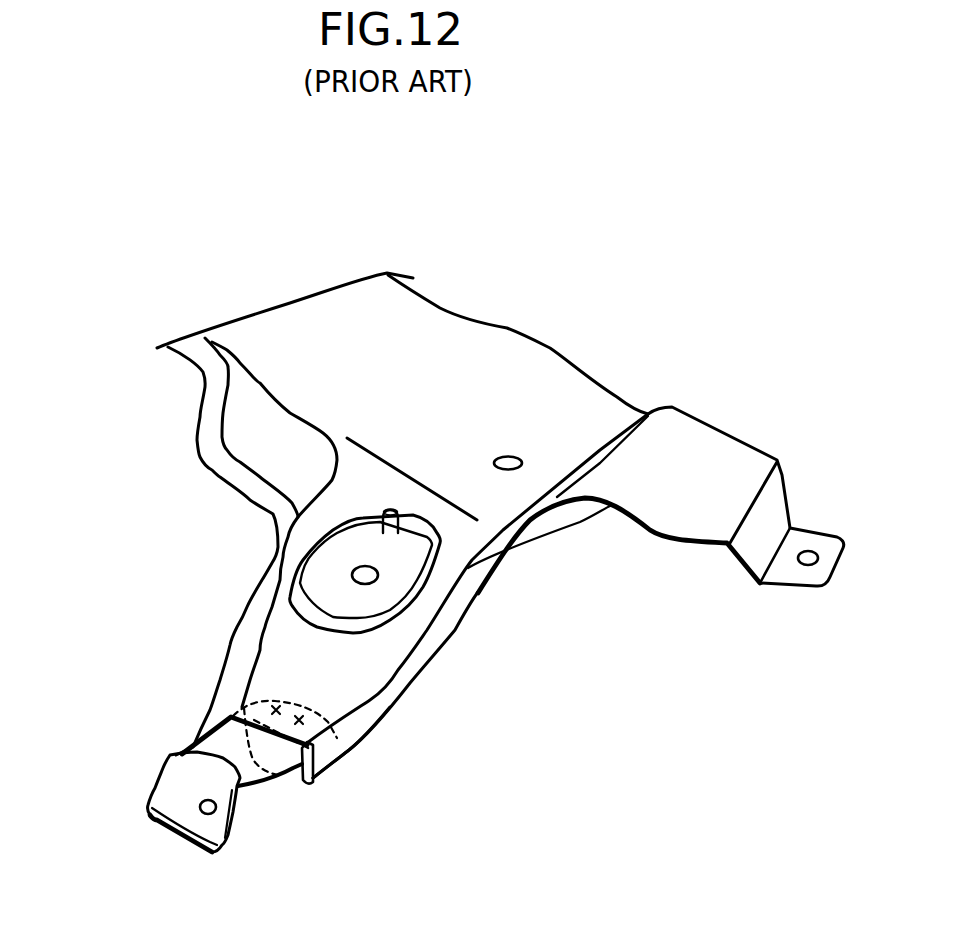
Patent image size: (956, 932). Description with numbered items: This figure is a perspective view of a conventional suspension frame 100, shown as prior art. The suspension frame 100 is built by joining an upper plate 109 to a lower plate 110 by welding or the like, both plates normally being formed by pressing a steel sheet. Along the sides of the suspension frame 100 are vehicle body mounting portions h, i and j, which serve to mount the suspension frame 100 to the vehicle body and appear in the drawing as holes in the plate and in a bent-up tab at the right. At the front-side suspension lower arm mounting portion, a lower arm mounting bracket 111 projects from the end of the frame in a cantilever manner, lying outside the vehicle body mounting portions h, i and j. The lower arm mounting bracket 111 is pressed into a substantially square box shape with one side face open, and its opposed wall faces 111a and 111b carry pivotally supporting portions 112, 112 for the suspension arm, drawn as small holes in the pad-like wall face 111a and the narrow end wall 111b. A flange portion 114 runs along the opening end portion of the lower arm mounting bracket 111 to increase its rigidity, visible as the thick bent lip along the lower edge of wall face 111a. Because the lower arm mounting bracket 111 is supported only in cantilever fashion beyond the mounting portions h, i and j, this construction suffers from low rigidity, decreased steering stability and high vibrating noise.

The suspension frame 100 is at (562, 370).
The upper plate 109 is at (360, 662).
The lower plate 110 is at (372, 733).
The lower arm mounting bracket 111 is at (221, 823).
The wall face 111a is at (166, 788).
The wall face 111b is at (310, 777).
The pivotally supporting portion 112 is at (205, 813).
The flange portion 114 is at (167, 825).
The vehicle body mounting portion h is at (373, 577).
The vehicle body mounting portion i is at (517, 471).
The vehicle body mounting portion j is at (808, 562).